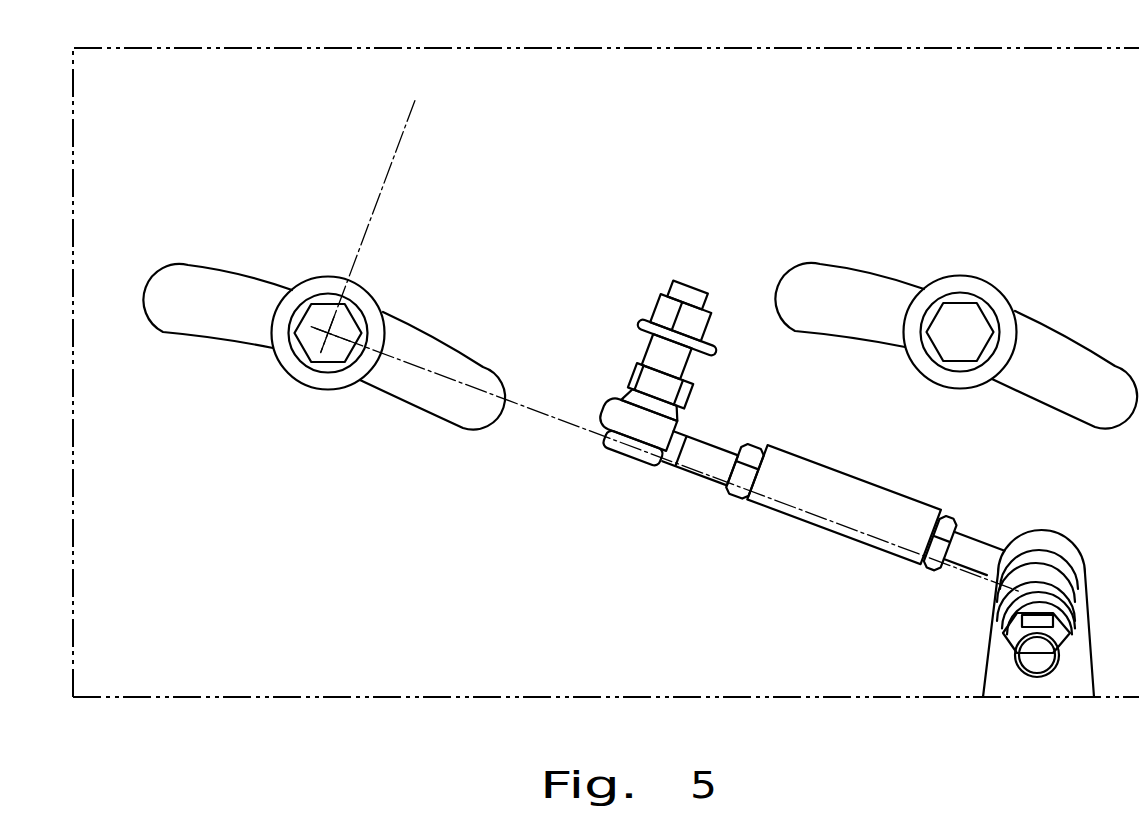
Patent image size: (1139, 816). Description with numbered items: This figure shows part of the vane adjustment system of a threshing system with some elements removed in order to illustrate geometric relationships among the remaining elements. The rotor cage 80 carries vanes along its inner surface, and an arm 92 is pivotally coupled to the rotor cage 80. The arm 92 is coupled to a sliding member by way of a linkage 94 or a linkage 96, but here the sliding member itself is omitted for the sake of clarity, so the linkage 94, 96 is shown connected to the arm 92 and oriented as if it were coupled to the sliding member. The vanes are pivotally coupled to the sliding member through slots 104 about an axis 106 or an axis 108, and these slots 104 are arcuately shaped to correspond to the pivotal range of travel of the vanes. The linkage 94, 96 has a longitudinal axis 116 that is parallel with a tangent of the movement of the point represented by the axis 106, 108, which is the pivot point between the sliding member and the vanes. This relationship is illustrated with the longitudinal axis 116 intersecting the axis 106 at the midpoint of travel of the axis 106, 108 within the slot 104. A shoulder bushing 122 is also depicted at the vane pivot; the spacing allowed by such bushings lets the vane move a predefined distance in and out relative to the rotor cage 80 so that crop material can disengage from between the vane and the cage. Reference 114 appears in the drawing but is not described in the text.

The rotor cage 80 is at (1003, 137).
The actuating linkage 114 is at (632, 395).
The slot 104 is at (215, 265).
The shoulder bushing 122 is at (376, 297).
The axis 106 is at (261, 360).
The axis 108 is at (303, 360).
The longitudinal axis 116 is at (548, 418).
The linkage 94 is at (822, 432).
The linkage 96 is at (860, 490).
The arm 92 is at (983, 668).